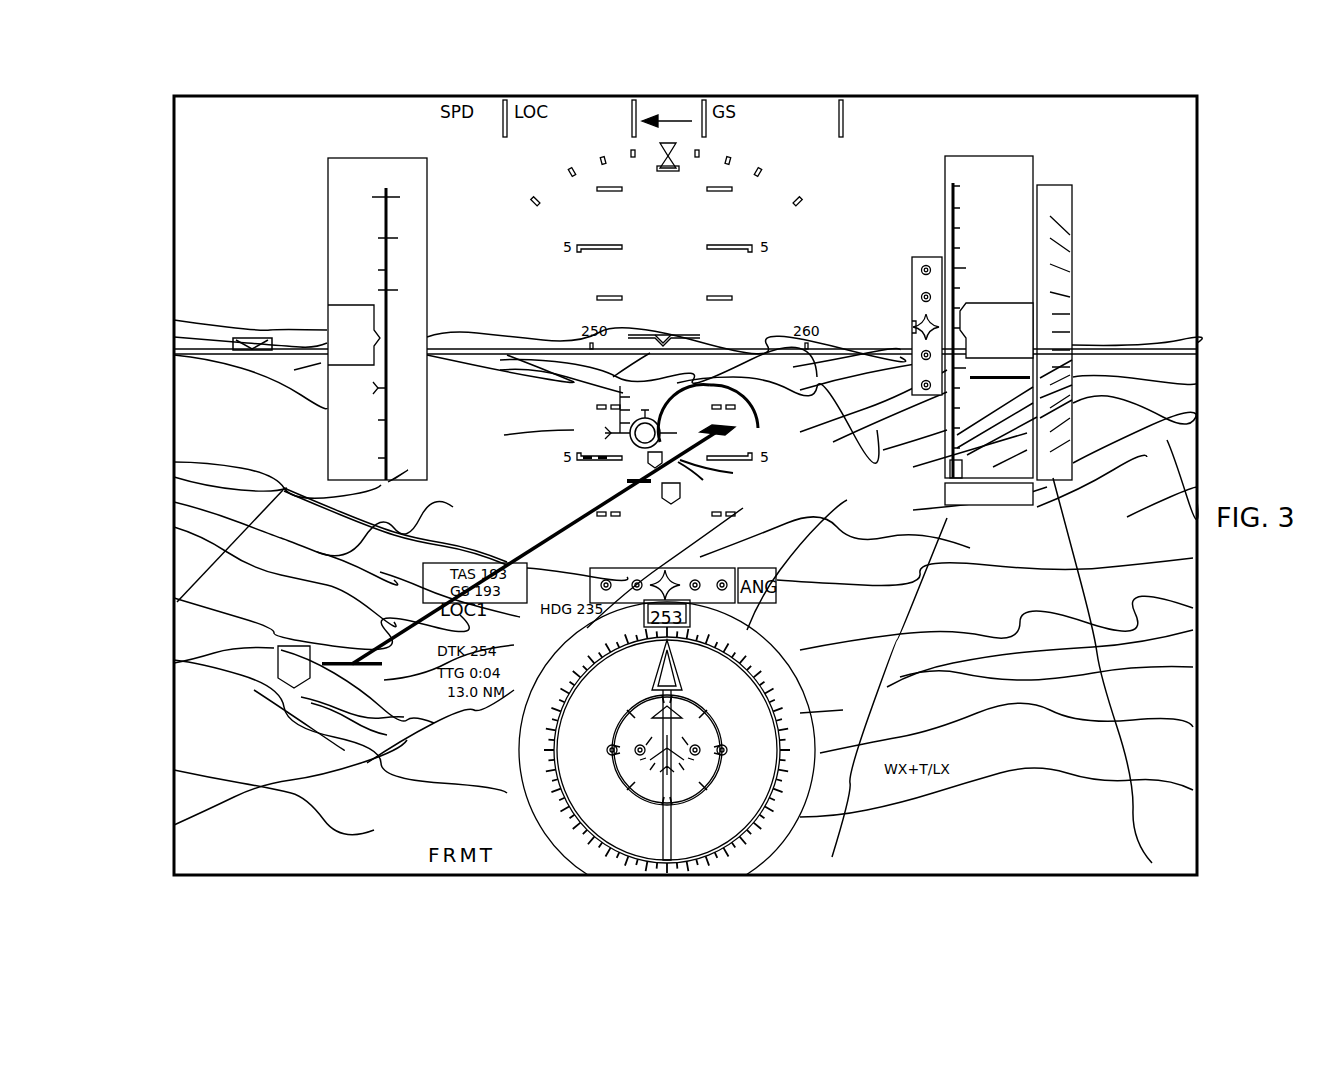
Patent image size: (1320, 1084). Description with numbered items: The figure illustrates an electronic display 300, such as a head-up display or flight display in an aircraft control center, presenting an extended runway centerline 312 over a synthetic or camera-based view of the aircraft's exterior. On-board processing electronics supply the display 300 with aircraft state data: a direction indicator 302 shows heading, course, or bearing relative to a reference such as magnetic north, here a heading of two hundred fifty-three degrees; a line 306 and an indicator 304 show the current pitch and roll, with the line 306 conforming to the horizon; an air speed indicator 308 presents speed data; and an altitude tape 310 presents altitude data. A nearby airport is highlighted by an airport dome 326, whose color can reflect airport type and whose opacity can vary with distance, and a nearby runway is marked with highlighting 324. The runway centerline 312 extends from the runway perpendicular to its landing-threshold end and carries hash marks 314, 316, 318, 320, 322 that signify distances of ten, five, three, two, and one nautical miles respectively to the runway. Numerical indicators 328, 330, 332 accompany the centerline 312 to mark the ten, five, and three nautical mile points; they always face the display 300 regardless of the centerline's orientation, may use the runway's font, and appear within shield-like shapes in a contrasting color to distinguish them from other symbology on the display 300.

The electronic display 300 is at (176, 96).
The direction indicator 302 is at (790, 828).
The indicator 304 is at (675, 165).
The line 306 is at (298, 345).
The air speed indicator 308 is at (335, 440).
The altitude tape 310 is at (920, 467).
The runway centerline 312 is at (550, 538).
The hash mark 314 is at (370, 665).
The hash mark 316 is at (643, 486).
The hash mark 318 is at (703, 480).
The hash mark 320 is at (733, 473).
The hash mark 322 is at (693, 452).
The highlighting 324 is at (689, 398).
The airport dome 326 is at (745, 400).
The indicator 328 is at (296, 650).
The indicator 330 is at (667, 504).
The indicator 332 is at (625, 458).